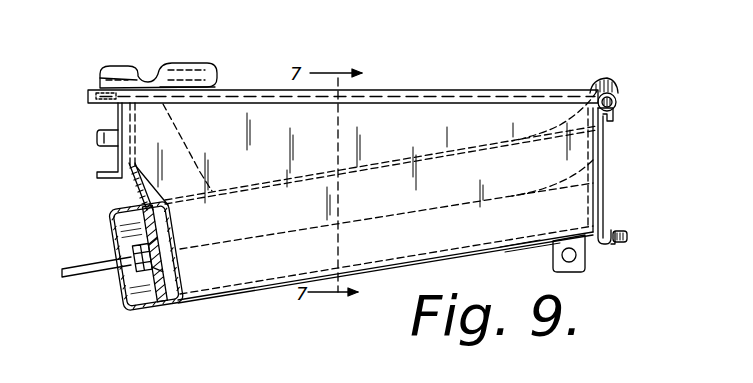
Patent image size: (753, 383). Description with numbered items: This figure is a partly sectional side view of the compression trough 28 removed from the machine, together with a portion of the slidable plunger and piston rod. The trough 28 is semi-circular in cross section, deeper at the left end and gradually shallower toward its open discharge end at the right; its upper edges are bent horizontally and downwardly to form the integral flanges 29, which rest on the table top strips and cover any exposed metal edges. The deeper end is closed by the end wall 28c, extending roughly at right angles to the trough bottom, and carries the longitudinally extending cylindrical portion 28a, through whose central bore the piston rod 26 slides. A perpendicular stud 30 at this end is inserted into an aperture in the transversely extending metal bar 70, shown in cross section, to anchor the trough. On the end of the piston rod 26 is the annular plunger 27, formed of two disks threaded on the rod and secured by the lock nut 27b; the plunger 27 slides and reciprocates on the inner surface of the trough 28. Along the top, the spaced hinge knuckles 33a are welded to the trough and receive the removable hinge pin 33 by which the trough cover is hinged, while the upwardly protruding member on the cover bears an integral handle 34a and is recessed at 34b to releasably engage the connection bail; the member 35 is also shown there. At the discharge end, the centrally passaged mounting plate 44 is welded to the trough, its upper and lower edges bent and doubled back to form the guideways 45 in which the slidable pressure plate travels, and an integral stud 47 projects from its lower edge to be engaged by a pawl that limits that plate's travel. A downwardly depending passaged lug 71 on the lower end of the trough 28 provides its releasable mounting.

The piston rod 26 is at (60, 277).
The plunger 27 is at (160, 302).
The lock nut 27b is at (128, 308).
The trough 28 is at (240, 300).
The cylindrical portion 28a is at (113, 243).
The end wall 28c is at (128, 165).
The flanges 29 is at (88, 100).
The stud 30 is at (97, 136).
The hinge pin 33 is at (617, 105).
The hinge knuckles 33a is at (616, 94).
The handle 34a is at (218, 74).
The recess 34b is at (148, 82).
The bumper base 35 is at (100, 79).
The mounting plate 44 is at (603, 183).
The guideways 45 is at (608, 132).
The stud 47 is at (628, 233).
The metal bar 70 is at (97, 172).
The lug 71 is at (586, 270).